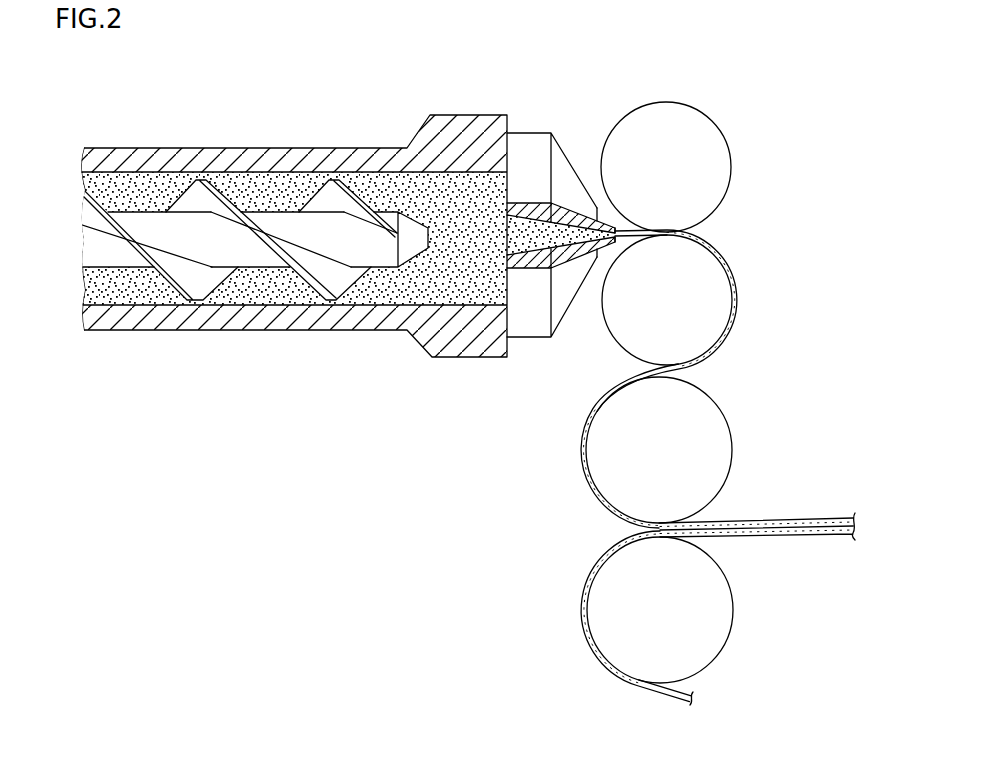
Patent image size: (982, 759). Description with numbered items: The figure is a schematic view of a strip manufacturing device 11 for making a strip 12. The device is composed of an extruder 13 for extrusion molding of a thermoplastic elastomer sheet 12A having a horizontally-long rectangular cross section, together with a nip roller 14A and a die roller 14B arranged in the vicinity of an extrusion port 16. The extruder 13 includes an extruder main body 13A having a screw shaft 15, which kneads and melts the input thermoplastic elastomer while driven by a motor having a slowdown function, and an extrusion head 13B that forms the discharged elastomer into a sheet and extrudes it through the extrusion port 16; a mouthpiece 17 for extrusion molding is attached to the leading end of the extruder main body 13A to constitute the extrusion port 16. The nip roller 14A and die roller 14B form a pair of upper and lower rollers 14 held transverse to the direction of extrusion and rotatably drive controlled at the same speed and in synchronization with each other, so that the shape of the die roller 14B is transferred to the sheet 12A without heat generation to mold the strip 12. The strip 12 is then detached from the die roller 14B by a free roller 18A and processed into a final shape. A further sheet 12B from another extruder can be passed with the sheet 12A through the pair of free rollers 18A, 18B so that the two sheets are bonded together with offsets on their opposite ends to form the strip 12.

The strip manufacturing device 11 is at (492, 75).
The strip 12 is at (819, 502).
The thermoplastic elastomer sheet 12A is at (625, 232).
The sheet 12B is at (583, 616).
The extruder 13 is at (384, 354).
The extruder main body 13A is at (206, 330).
The extrusion head 13B is at (527, 338).
The roller unit 14 is at (688, 82).
The nip roller 14A is at (718, 167).
The die roller 14B is at (708, 302).
The screw shaft 15 is at (131, 273).
The extrusion port 16 is at (612, 243).
The mouthpiece 17 is at (572, 210).
The free roller 18A is at (730, 452).
The free roller 18B is at (728, 606).